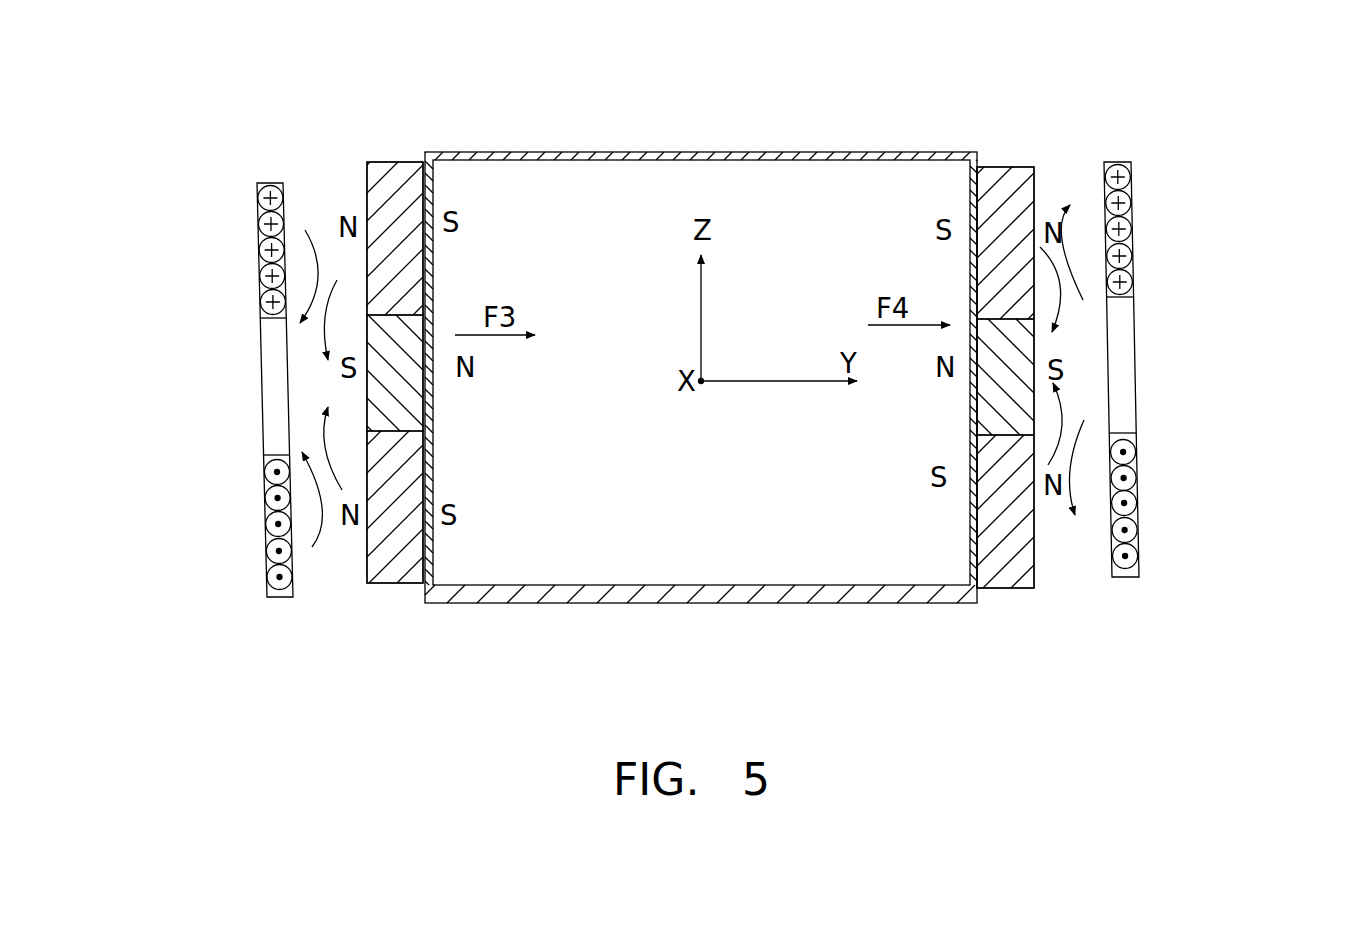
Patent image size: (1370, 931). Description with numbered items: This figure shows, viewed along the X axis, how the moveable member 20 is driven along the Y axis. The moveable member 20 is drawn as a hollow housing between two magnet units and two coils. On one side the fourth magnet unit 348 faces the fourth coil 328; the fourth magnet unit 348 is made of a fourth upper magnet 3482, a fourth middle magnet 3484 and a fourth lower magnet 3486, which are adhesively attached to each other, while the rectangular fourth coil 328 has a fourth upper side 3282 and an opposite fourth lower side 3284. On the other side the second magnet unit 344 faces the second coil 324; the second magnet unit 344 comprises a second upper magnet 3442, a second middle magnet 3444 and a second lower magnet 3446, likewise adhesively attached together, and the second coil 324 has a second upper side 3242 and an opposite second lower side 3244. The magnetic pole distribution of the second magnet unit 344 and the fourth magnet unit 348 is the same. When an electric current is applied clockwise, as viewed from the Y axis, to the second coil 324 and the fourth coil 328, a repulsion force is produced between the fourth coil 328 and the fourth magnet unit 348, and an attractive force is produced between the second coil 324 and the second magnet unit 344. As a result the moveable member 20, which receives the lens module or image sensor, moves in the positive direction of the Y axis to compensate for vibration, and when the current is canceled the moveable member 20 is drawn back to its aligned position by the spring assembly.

The moveable member 20 is at (656, 153).
The fourth magnet unit 348 is at (457, 326).
The fourth upper magnet 3482 is at (418, 258).
The fourth middle magnet 3484 is at (418, 408).
The fourth lower magnet 3486 is at (418, 470).
The second magnet unit 344 is at (945, 311).
The second upper magnet 3442 is at (990, 265).
The second middle magnet 3444 is at (990, 398).
The second lower magnet 3446 is at (990, 460).
The fourth coil 328 is at (171, 390).
The fourth upper side 3282 is at (258, 282).
The fourth lower side 3284 is at (212, 514).
The second coil 324 is at (1223, 369).
The second upper side 3242 is at (1130, 236).
The second lower side 3244 is at (1183, 487).